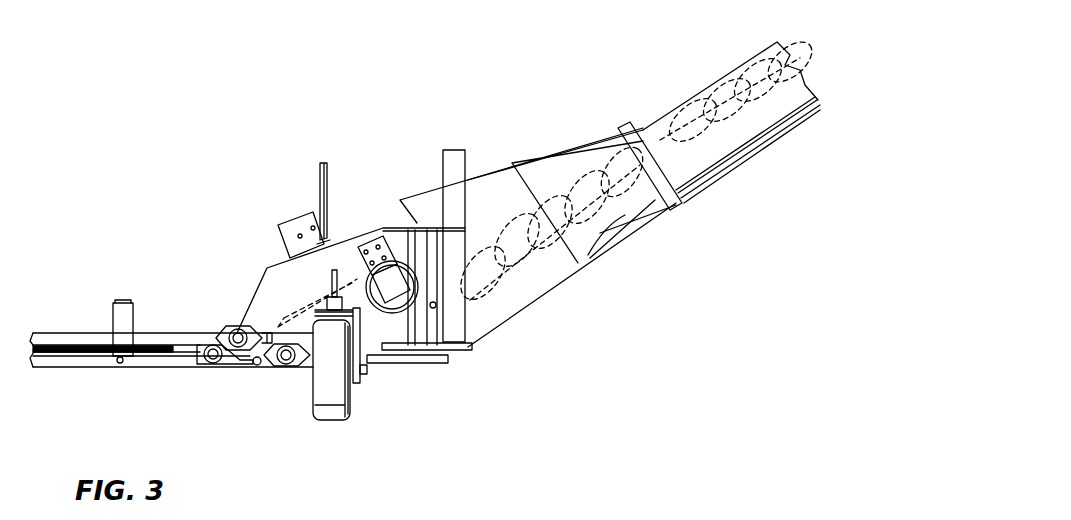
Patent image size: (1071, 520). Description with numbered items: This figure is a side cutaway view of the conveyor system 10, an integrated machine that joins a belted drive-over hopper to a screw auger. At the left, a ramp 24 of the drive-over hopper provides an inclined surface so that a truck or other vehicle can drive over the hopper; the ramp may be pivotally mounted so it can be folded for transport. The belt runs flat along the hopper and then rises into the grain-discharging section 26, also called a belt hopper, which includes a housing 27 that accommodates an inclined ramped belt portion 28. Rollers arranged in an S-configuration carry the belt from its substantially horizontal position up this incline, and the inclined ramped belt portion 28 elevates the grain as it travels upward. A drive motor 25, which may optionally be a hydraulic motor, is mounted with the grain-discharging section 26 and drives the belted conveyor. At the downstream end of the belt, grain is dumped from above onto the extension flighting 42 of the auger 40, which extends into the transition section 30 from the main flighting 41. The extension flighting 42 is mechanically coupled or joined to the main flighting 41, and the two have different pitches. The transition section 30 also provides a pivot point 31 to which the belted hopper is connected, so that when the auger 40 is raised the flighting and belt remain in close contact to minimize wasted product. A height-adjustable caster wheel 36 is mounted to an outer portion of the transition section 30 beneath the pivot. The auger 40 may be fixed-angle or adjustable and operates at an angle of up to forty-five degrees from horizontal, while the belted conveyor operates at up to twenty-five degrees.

The conveyor system 10 is at (138, 233).
The ramp 24 is at (96, 331).
The drive motor 25 is at (390, 273).
The grain-discharging section 26 is at (279, 289).
The housing 27 is at (267, 267).
The inclined ramped belt portion 28 is at (283, 312).
The transition section 30 is at (542, 283).
The pivot point 31 is at (427, 324).
The caster wheel 36 is at (325, 387).
The auger 40 is at (727, 157).
The main flighting 41 is at (700, 102).
The extension flighting 42 is at (493, 297).